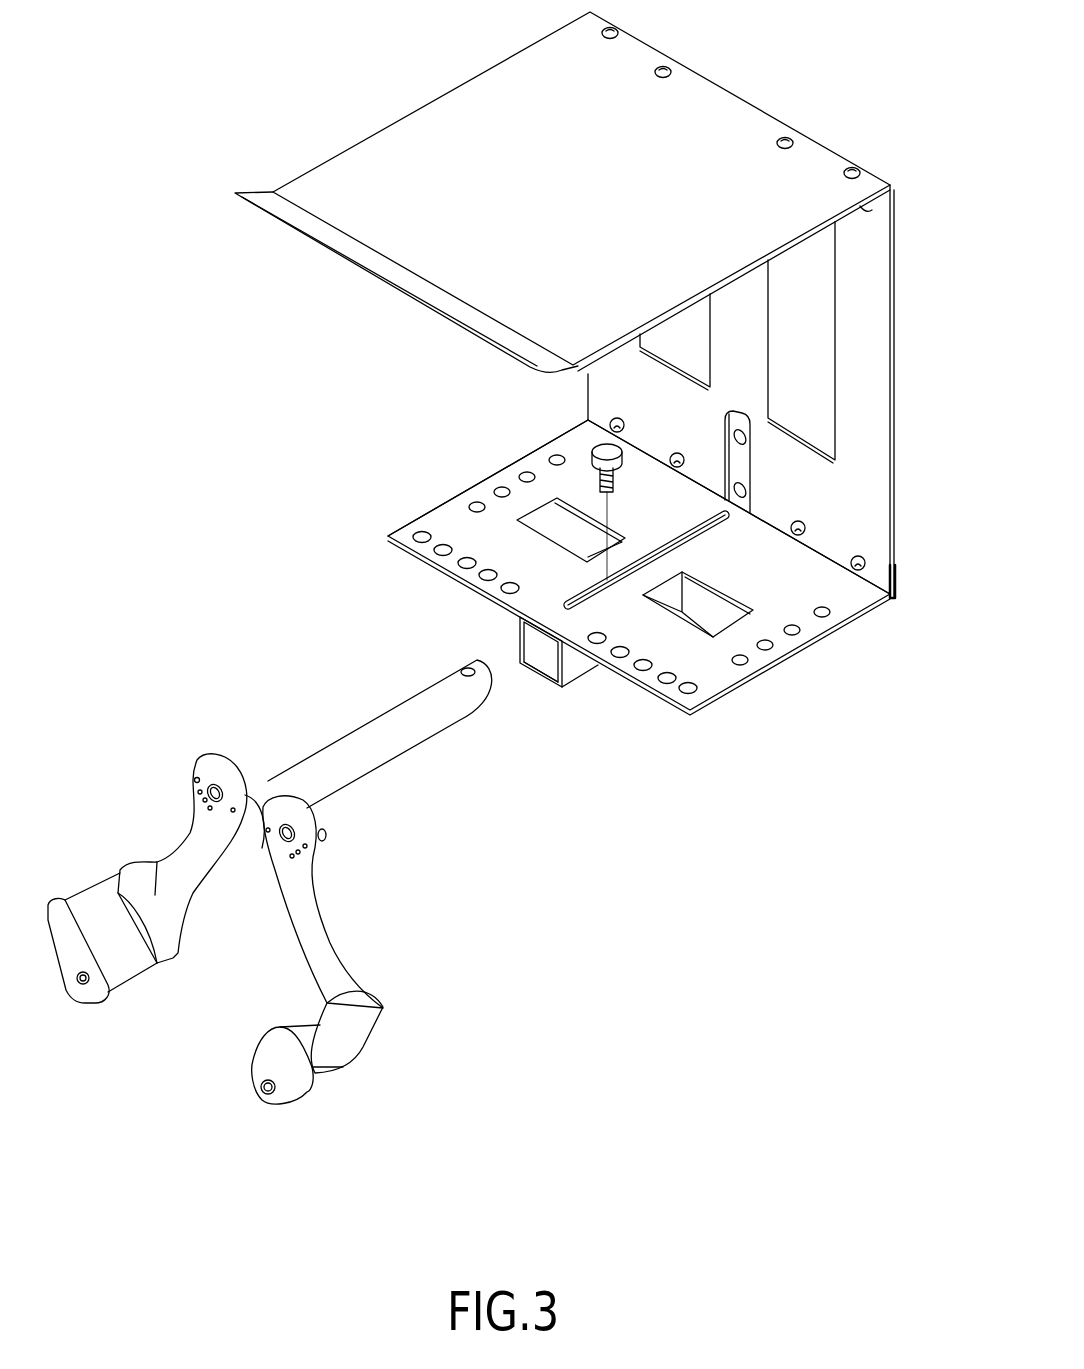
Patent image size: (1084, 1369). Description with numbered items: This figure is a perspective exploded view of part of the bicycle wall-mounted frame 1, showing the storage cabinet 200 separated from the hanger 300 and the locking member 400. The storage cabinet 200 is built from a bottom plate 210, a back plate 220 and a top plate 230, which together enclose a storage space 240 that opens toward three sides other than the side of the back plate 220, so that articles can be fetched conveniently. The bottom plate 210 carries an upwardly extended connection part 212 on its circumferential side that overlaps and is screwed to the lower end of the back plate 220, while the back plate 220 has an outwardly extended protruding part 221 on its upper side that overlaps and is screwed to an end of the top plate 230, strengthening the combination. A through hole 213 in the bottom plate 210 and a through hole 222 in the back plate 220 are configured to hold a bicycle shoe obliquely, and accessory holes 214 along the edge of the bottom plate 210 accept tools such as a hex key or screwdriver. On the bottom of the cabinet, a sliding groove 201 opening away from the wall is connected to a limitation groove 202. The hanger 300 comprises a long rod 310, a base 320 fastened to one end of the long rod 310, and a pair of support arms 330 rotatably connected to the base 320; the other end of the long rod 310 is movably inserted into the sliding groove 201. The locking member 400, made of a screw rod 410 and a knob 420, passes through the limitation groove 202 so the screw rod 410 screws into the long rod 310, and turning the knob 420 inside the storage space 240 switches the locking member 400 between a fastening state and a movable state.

The bicycle wall-mounted frame 1 is at (693, 880).
The storage cabinet 200 is at (345, 135).
The sliding groove 201 is at (548, 675).
The limitation groove 202 is at (640, 557).
The bottom plate 210 is at (735, 690).
The connection part 212 is at (895, 585).
The through hole 213 is at (720, 600).
The accessory hole 214 is at (476, 505).
The back plate 220 is at (873, 302).
The protruding part 221 is at (875, 213).
The through hole 222 is at (680, 357).
The top plate 230 is at (460, 100).
The storage space 240 is at (866, 532).
The hanger 300 is at (133, 732).
The long rod 310 is at (335, 740).
The base 320 is at (250, 840).
The support arms 330 is at (178, 850).
The locking member 400 is at (583, 447).
The screw rod 410 is at (595, 470).
The knob 420 is at (607, 457).